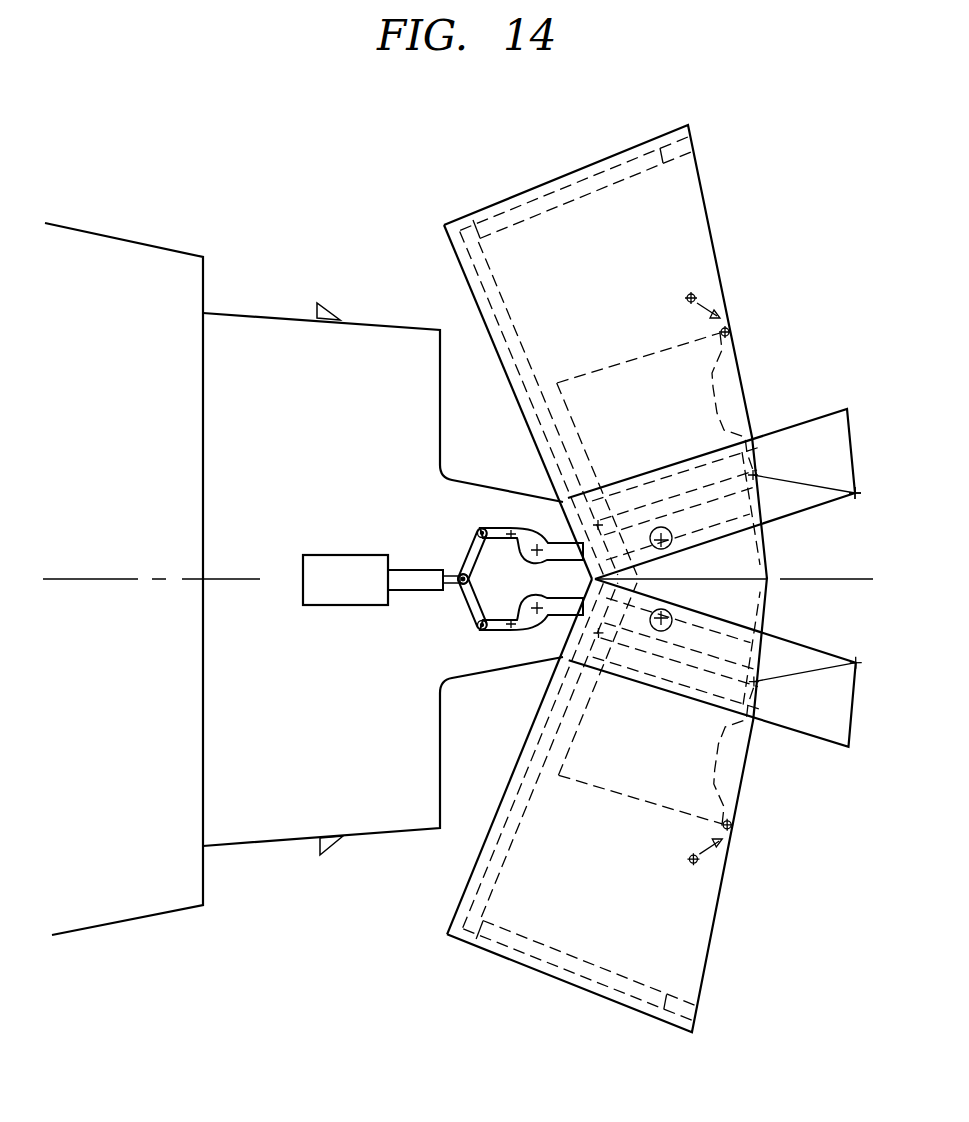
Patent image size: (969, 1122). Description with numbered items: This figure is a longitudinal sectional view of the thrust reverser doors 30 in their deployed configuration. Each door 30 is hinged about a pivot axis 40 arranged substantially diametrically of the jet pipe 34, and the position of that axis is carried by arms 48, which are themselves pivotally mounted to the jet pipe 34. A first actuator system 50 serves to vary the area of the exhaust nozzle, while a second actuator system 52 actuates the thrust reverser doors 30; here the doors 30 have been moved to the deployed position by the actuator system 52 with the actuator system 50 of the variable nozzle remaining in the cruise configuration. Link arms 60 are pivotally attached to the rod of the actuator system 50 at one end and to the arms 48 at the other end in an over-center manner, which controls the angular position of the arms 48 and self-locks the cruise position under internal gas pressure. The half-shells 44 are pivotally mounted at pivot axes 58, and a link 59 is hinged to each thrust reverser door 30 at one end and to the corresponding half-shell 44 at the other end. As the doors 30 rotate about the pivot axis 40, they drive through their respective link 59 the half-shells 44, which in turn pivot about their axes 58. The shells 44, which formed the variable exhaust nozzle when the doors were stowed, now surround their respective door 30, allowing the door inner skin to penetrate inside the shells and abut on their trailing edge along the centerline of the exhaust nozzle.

The thrust reverser doors 30 is at (705, 198).
The jet pipe 34 is at (227, 313).
The pivot axis 40 is at (535, 533).
The half-shells 44 is at (823, 415).
The arms 48 is at (488, 527).
The first actuator system 50 is at (423, 592).
The second actuator system 52 is at (316, 607).
The pivot axes 58 is at (668, 528).
The link 59 is at (838, 494).
The link arms 60 is at (462, 588).